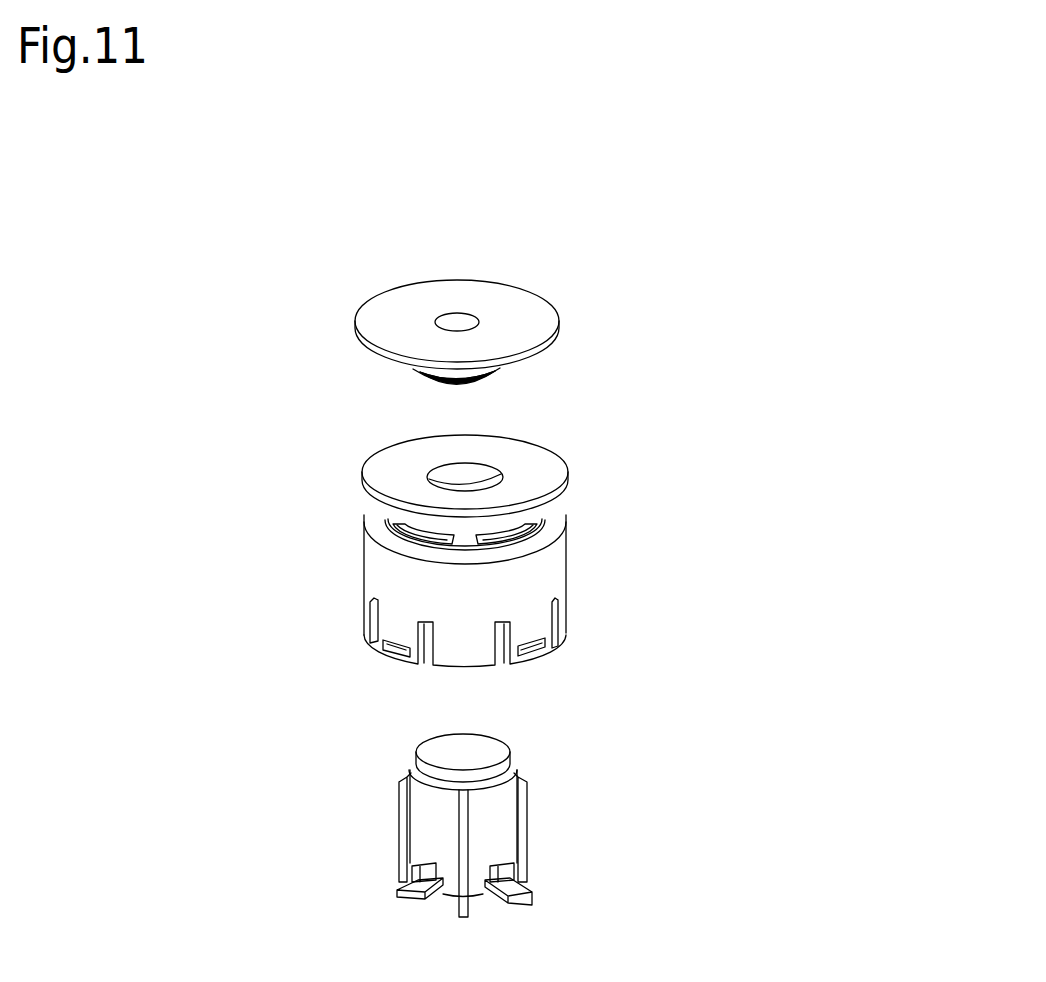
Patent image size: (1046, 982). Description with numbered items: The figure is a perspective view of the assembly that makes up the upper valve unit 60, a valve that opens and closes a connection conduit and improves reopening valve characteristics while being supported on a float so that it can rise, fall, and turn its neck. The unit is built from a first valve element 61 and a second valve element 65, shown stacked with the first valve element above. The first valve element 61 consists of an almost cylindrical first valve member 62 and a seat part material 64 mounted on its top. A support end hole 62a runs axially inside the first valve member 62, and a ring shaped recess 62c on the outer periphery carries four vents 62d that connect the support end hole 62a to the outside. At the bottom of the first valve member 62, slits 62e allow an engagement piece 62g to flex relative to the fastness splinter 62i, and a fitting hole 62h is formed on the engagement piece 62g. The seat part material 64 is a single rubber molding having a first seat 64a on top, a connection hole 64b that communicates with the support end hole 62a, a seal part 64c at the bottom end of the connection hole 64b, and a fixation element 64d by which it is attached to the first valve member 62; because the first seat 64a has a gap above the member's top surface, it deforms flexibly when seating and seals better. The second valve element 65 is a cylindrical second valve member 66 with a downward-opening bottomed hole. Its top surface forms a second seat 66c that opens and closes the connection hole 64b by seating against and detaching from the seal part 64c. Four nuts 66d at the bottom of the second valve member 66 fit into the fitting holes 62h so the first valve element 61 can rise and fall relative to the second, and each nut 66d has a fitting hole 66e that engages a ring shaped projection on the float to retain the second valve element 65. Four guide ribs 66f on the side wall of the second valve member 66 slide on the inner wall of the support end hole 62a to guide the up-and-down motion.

The upper valve unit 60 is at (822, 430).
The first valve element 61 is at (732, 318).
The first valve member 62 is at (471, 581).
The support end hole 62a is at (437, 472).
The ring shaped recess 62c is at (378, 527).
The vent 62d is at (397, 540).
The slit 62e is at (565, 635).
The engagement piece 62g is at (537, 625).
The fitting hole 62h is at (543, 650).
The fastness splinter 62i is at (467, 658).
The seat part material 64 is at (469, 314).
The first seat 64a is at (527, 302).
The connection hole 64b is at (453, 316).
The seal part 64c is at (460, 382).
The fixation element 64d is at (413, 371).
The second valve element 65 is at (538, 808).
The second valve member 66 is at (458, 850).
The second seat 66c is at (492, 757).
The nut 66d is at (527, 900).
The fitting hole 66e is at (510, 902).
The guide rib 66f is at (527, 847).